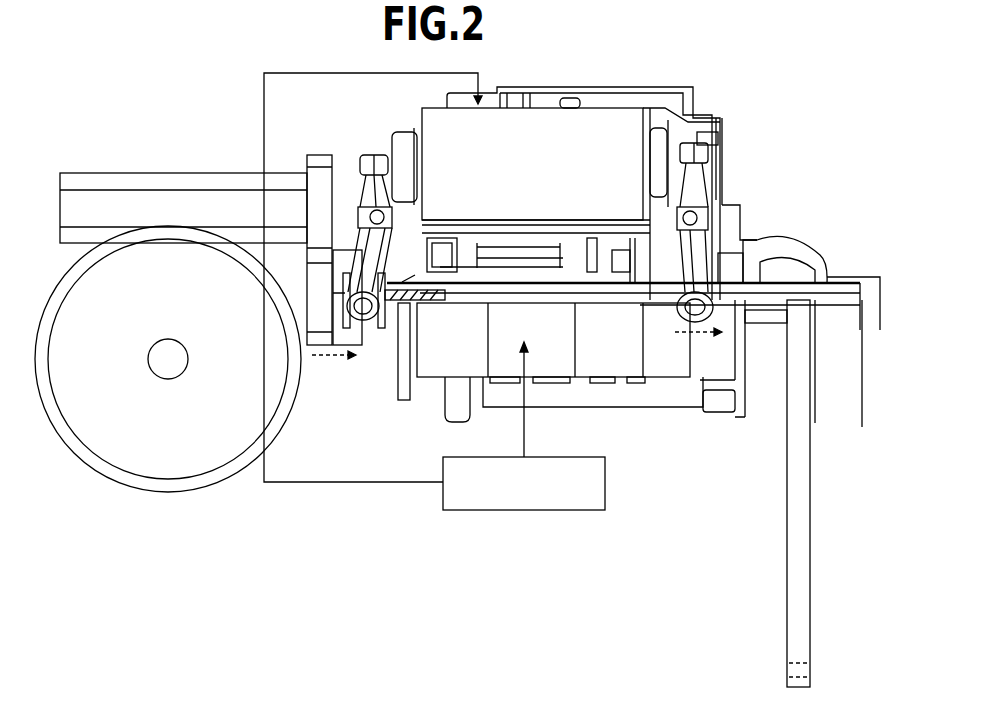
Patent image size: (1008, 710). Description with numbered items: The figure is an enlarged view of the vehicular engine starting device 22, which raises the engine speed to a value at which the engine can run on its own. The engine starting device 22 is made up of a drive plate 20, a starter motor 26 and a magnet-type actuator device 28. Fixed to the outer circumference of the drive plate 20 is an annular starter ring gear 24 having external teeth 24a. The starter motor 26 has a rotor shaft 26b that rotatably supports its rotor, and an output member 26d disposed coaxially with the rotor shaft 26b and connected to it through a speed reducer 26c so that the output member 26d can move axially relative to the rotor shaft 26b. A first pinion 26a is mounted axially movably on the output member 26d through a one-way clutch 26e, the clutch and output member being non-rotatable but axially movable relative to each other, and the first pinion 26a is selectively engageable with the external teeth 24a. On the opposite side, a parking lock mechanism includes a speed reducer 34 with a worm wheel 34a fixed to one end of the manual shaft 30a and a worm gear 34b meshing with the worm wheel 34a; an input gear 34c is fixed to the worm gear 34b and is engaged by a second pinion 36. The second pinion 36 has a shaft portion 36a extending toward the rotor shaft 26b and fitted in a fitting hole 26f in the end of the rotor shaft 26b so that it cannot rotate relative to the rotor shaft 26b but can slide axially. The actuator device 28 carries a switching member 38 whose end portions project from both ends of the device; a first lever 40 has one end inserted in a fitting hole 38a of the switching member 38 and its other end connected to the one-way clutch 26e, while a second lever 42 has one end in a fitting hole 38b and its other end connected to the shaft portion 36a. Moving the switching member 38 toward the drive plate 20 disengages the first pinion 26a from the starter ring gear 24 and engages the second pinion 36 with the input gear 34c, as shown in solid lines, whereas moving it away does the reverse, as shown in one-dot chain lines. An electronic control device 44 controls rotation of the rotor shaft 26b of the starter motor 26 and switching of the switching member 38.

The drive plate 20 is at (776, 607).
The engine starting device 22 is at (695, 80).
The starter ring gear 24 is at (803, 365).
The external teeth 24a is at (808, 685).
The starter motor 26 is at (434, 392).
The first pinion 26a is at (815, 258).
The rotor shaft 26b is at (500, 300).
The speed reducer 26c is at (607, 218).
The output member 26d is at (758, 242).
The one-way clutch 26e is at (728, 232).
The fitting hole 26f is at (445, 257).
The actuator device 28 is at (521, 115).
The manual shaft 30a is at (168, 380).
The speed reducer 34 is at (142, 167).
The worm wheel 34a is at (181, 468).
The worm gear 34b is at (183, 200).
The input gear 34c is at (318, 173).
The second pinion 36 is at (317, 290).
The shaft portion 36a is at (391, 312).
The switching member 38 is at (372, 164).
The fitting hole 38a is at (711, 152).
The fitting hole 38b is at (372, 163).
The first lever 40 is at (673, 178).
The second lever 42 is at (400, 165).
The electronic control device 44 is at (507, 503).